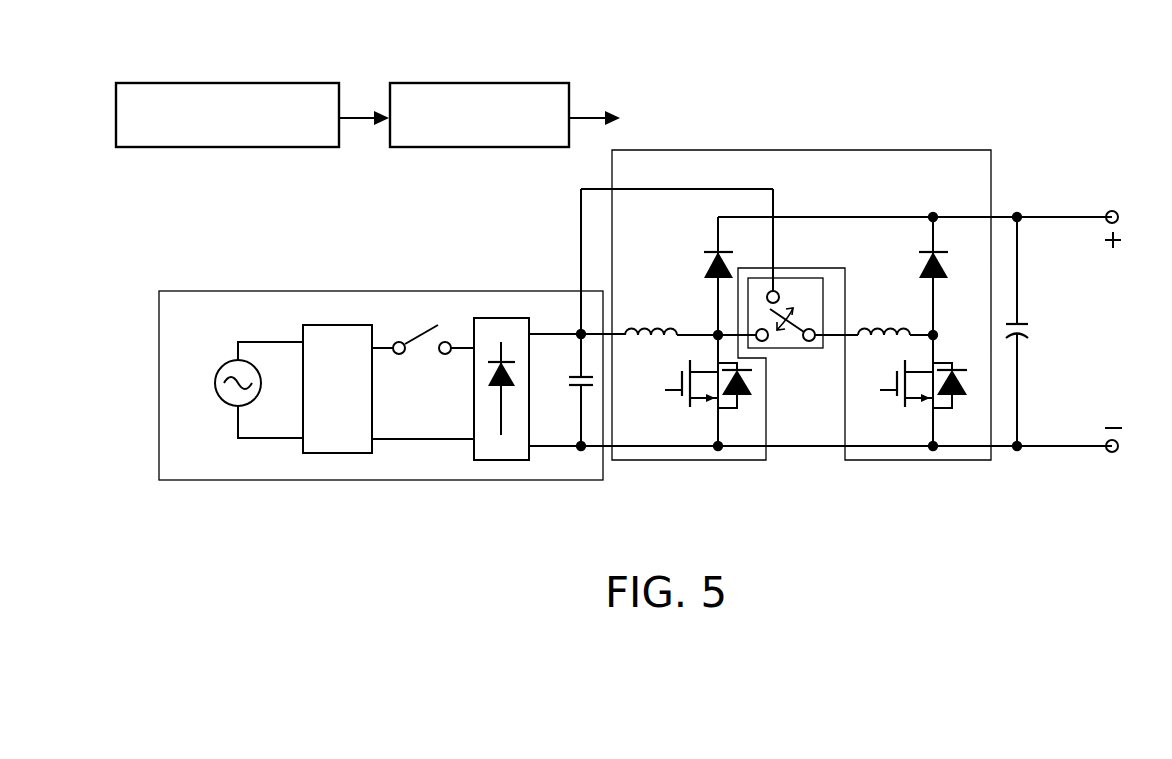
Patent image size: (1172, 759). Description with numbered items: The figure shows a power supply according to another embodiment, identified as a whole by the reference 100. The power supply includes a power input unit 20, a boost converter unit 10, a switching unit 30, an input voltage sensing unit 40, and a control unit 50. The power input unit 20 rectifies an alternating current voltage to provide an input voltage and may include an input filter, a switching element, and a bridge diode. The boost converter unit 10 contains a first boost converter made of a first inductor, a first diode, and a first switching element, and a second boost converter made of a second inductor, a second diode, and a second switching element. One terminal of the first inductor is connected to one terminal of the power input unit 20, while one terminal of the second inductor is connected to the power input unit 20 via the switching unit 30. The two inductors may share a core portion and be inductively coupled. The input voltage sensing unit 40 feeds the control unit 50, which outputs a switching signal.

The boost converter unit 10 is at (916, 150).
The power input unit 20 is at (402, 291).
The switching unit 30 is at (802, 348).
The input voltage sensing unit 40 is at (273, 83).
The control unit 50 is at (503, 83).
The power supply apparatus 100 is at (1070, 136).